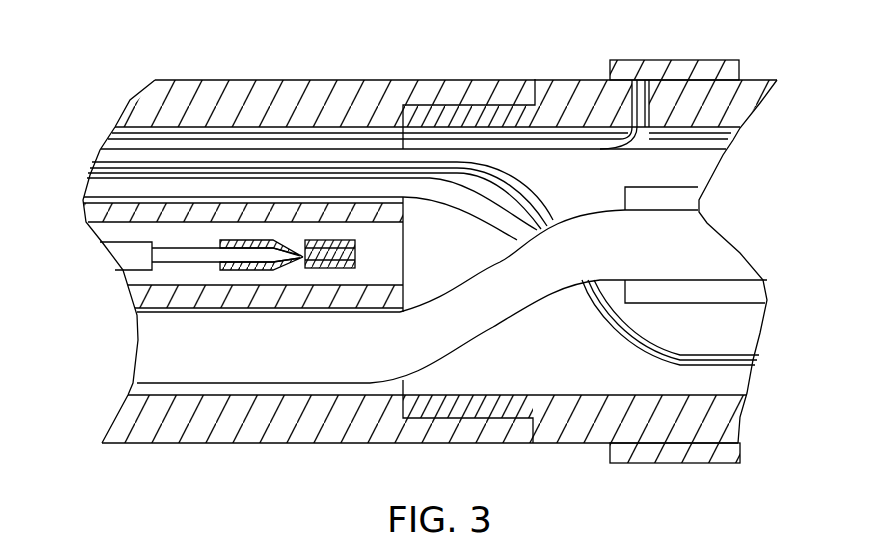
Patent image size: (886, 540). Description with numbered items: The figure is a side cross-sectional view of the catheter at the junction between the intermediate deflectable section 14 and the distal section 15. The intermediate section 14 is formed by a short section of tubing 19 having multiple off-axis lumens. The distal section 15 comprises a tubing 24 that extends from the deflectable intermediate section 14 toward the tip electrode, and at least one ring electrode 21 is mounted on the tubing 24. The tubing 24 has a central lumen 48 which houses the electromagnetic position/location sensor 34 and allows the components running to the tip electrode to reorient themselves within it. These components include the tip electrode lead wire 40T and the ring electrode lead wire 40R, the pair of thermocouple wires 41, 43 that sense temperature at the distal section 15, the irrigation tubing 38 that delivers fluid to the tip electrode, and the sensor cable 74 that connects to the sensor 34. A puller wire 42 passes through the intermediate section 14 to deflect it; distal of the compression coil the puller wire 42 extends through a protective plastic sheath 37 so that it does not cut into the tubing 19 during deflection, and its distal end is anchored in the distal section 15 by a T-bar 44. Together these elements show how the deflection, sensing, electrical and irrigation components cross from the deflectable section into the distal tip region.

The intermediate deflectable section 14 is at (316, 60).
The distal section 15 is at (570, 52).
The tubing 19 is at (263, 97).
The ring electrode 21 is at (707, 58).
The tubing 24 is at (577, 437).
The electromagnetic position/location sensor 34 is at (753, 295).
The protective plastic sheath 37 is at (121, 257).
The irrigation tubing 38 is at (727, 250).
The ring electrode lead wire 40R is at (641, 78).
The tip electrode lead wire 40T is at (727, 133).
The thermocouple wire 41 is at (757, 357).
The puller wire 42 is at (173, 255).
The thermocouple wire 43 is at (757, 365).
The T-bar 44 is at (290, 270).
The central lumen 48 is at (573, 364).
The sensor cable 74 is at (100, 188).